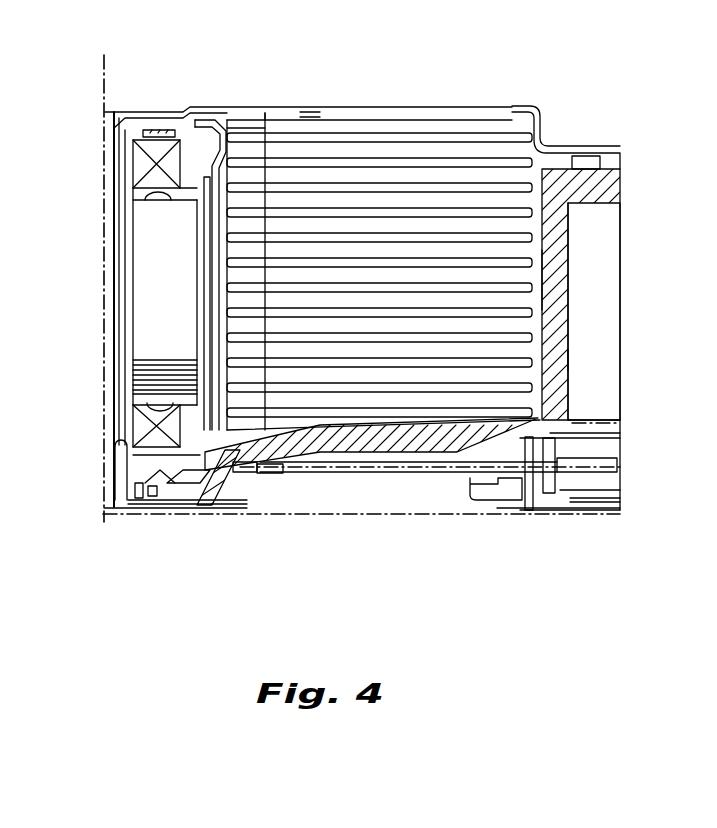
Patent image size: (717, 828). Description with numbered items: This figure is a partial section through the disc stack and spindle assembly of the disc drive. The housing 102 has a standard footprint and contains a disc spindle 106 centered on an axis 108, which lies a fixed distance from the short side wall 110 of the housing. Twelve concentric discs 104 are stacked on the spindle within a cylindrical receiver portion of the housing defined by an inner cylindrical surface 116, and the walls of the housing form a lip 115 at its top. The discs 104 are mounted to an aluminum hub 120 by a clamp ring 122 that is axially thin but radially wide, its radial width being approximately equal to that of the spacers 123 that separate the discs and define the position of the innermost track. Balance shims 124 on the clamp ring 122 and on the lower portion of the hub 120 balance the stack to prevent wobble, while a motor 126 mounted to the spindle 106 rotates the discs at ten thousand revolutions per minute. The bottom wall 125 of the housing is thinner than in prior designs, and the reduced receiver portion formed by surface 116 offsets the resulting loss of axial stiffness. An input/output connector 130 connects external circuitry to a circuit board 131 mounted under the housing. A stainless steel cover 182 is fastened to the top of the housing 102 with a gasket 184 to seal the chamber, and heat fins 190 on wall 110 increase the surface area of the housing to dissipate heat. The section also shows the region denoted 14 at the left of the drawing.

The optical module 14 is at (12, 246).
The housing 102 is at (569, 218).
The discs 104 is at (534, 268).
The disc spindle 106 is at (103, 287).
The axis 108 is at (106, 70).
The short side wall 110 is at (569, 360).
The lip 115 is at (621, 192).
The inner cylindrical surface 116 is at (538, 295).
The hub 120 is at (216, 126).
The clamp ring 122 is at (240, 120).
The spacers 123 is at (292, 178).
The balance shims 124 is at (312, 106).
The bottom wall 125 is at (279, 440).
The motor 126 is at (174, 262).
The input/output connector 130 is at (619, 425).
The circuit board 131 is at (437, 478).
The cover 182 is at (557, 108).
The gasket 184 is at (600, 163).
The heat fins 190 is at (606, 321).